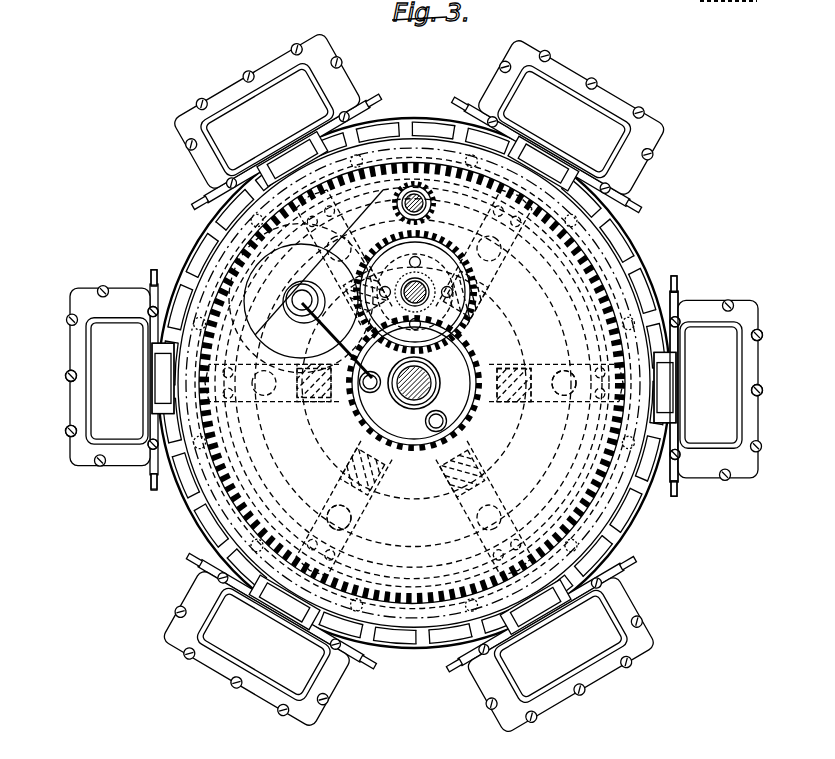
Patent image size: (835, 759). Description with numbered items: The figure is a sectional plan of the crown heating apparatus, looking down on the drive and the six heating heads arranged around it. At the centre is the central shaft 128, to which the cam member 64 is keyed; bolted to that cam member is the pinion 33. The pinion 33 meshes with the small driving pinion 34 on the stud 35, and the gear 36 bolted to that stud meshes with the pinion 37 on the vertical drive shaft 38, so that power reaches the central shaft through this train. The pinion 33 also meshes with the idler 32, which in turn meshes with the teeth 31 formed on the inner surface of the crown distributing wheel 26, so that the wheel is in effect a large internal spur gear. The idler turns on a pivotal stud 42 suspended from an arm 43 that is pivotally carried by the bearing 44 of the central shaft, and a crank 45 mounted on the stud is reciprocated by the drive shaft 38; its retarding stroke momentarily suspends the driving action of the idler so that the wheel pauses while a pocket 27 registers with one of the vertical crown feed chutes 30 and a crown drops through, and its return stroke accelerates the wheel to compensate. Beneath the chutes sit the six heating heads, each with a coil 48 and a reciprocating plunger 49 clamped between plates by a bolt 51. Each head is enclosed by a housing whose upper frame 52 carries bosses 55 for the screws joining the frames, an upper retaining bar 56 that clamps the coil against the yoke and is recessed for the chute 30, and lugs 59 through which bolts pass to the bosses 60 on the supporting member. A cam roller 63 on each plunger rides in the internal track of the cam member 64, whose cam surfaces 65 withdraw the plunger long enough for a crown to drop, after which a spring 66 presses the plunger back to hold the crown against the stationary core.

The crown distributing wheel 26 is at (645, 267).
The vertical pockets 27 is at (205, 228).
The vertical crown feed chutes 30 is at (676, 400).
The teeth 31 is at (258, 412).
The idler 32 is at (285, 392).
The pinion 33 is at (358, 410).
The small driving pinion 34 is at (418, 273).
The stud 35 is at (402, 270).
The gear 36 is at (466, 258).
The pinion 37 is at (438, 185).
The vertical drive shaft 38 is at (398, 197).
The pivotal stud 42 is at (302, 290).
The arm 43 is at (322, 338).
The bearing 44 is at (432, 385).
The crank 45 is at (385, 222).
The coil 48 is at (414, 383).
The reciprocating plunger 49 is at (302, 400).
The bolt 51 is at (322, 548).
The upper frame 52 is at (756, 337).
The bosses 55 is at (763, 390).
The upper retaining bar 56 is at (678, 385).
The lugs 59 is at (677, 287).
The bosses 60 is at (652, 287).
The cam roller 63 is at (345, 512).
The cam member 64 is at (570, 470).
The cam surfaces 65 is at (285, 306).
The spring 66 is at (316, 392).
The central shaft 128 is at (402, 395).